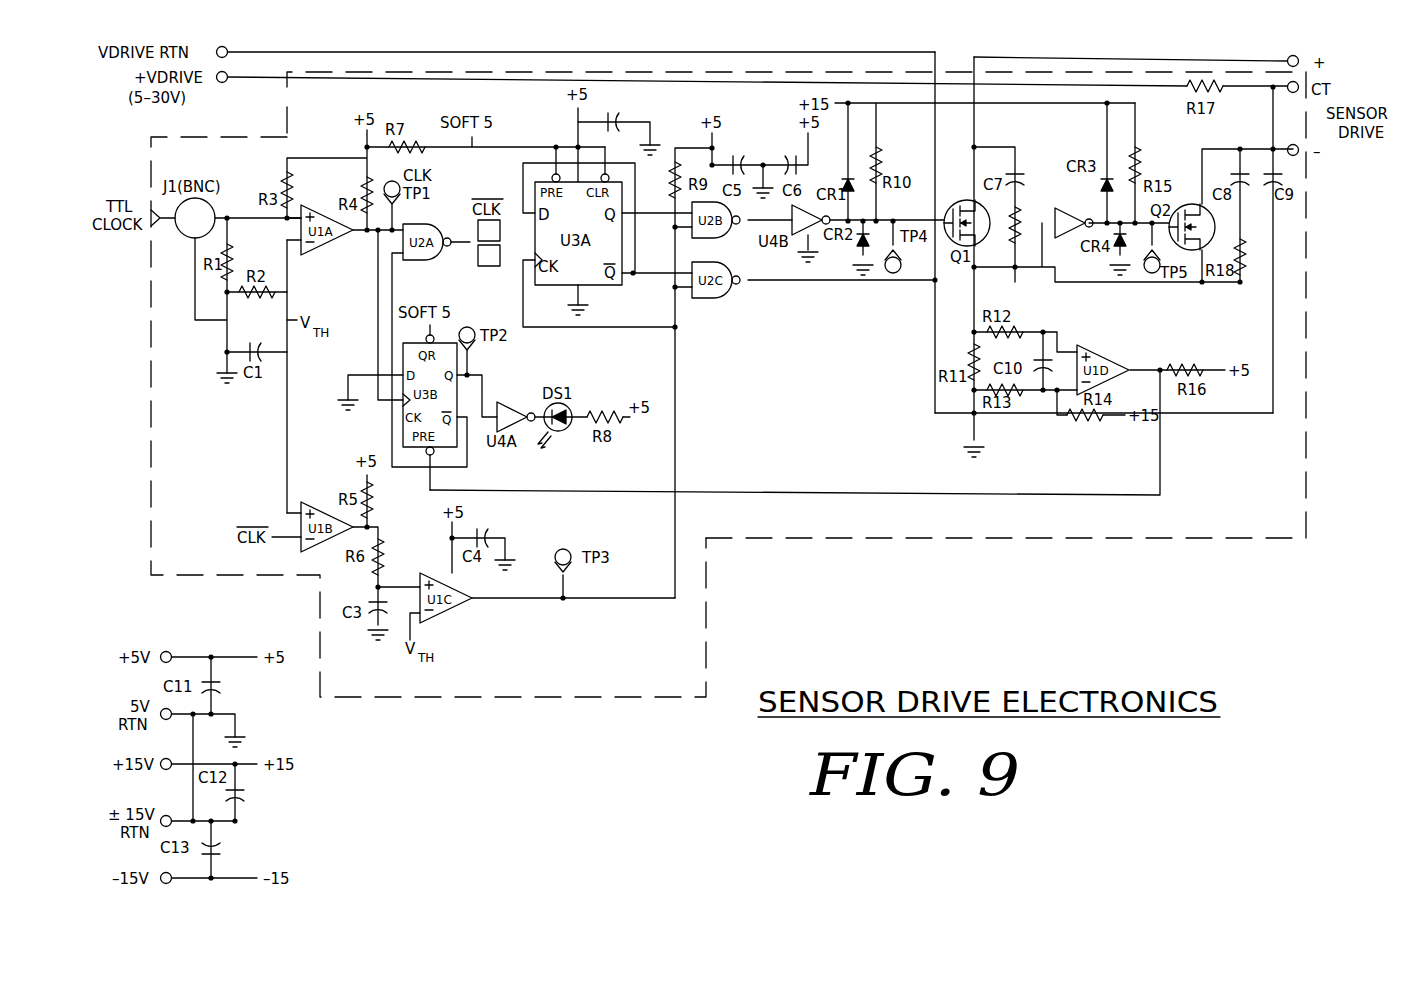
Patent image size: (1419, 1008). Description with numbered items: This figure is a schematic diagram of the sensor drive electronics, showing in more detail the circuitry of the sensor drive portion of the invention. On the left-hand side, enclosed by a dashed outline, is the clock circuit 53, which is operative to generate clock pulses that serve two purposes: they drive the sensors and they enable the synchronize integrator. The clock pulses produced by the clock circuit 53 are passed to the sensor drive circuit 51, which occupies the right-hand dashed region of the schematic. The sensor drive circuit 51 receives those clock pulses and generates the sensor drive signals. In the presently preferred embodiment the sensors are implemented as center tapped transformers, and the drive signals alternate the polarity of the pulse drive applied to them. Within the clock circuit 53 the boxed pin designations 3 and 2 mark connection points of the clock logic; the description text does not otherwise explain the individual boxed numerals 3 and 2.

The sensor drive circuit 51 is at (1210, 542).
The clock circuit 53 is at (272, 578).
The U2A pin 3 is at (489, 230).
The U2A pin 2 is at (489, 255).